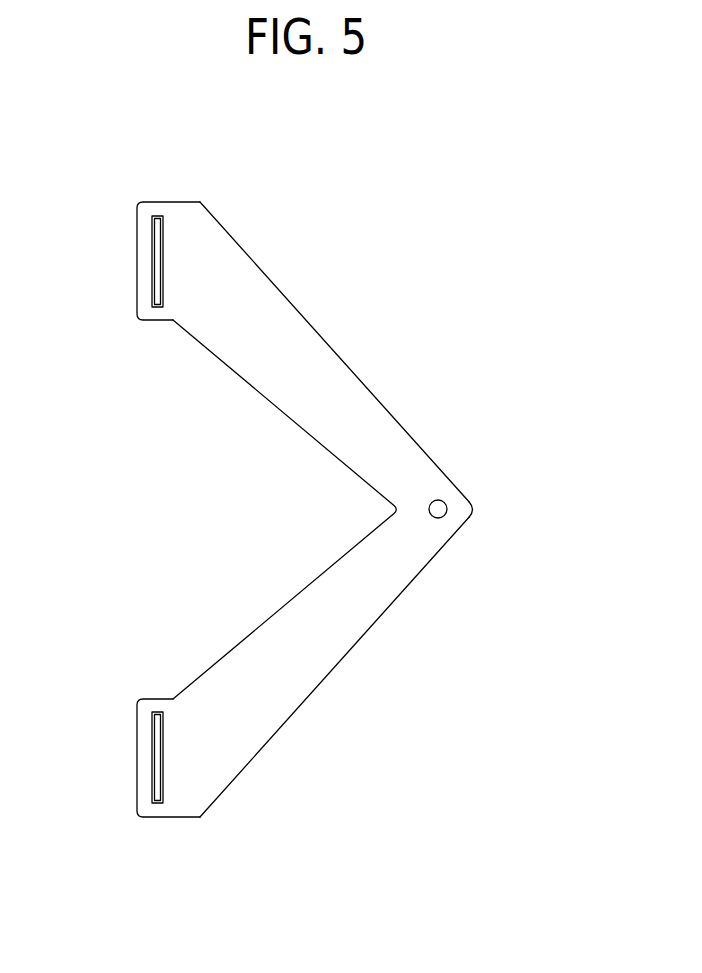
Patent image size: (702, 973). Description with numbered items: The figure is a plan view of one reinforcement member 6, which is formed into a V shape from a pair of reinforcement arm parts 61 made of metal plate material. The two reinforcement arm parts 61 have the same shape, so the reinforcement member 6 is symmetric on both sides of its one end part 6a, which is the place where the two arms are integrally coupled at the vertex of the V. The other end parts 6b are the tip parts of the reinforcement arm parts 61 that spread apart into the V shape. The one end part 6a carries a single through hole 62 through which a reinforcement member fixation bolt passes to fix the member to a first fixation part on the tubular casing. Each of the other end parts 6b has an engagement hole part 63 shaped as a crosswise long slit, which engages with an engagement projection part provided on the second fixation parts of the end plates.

The reinforcement member 6 is at (456, 300).
The one end part 6a is at (463, 526).
The other end part 6b is at (188, 202).
The reinforcement arm part 61 is at (344, 362).
The through hole 62 is at (440, 499).
The engagement hole part 63 is at (152, 265).